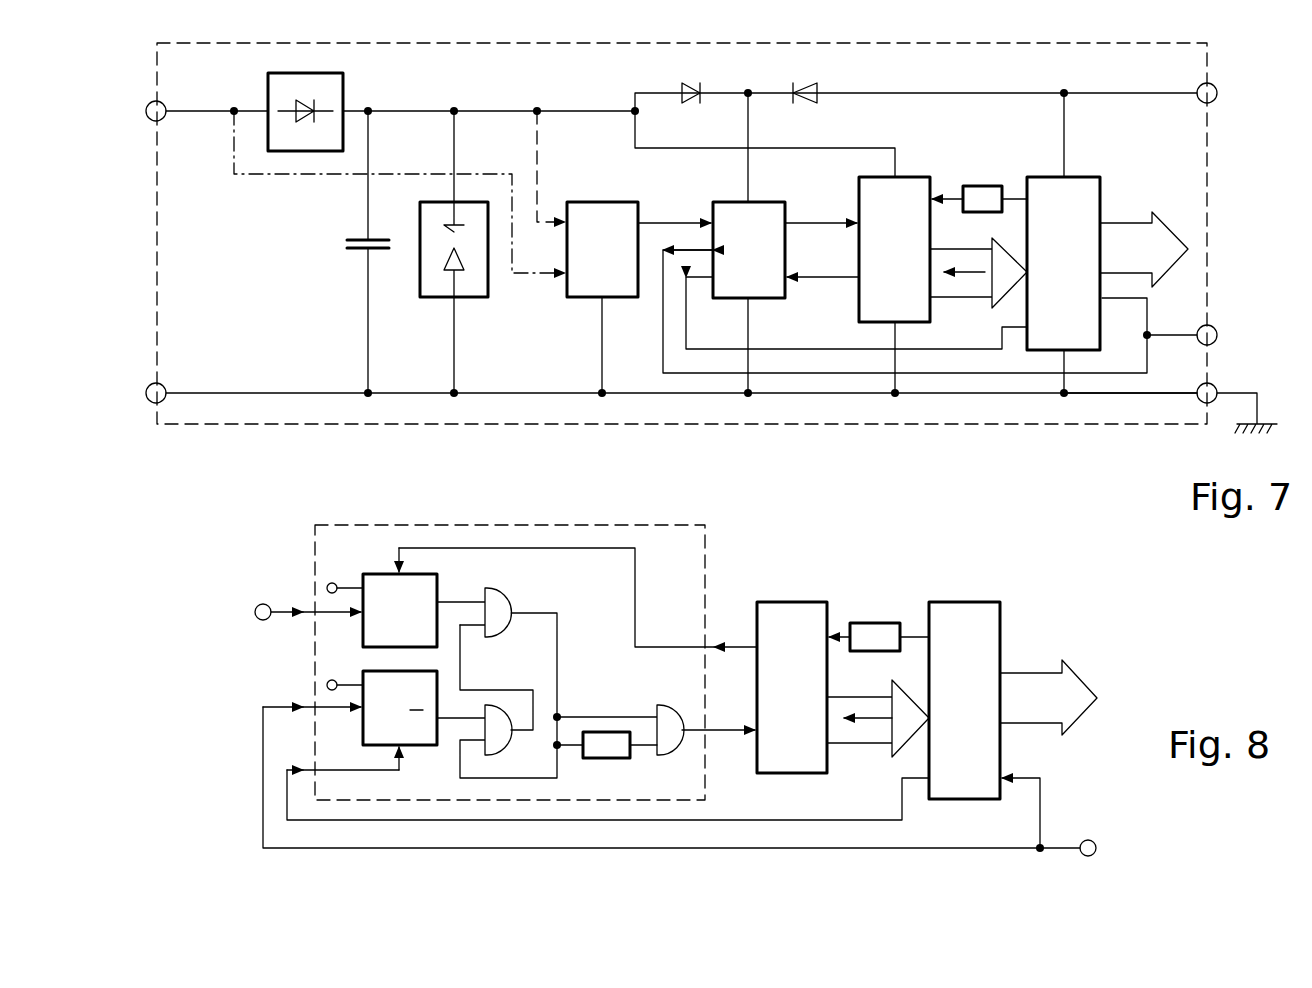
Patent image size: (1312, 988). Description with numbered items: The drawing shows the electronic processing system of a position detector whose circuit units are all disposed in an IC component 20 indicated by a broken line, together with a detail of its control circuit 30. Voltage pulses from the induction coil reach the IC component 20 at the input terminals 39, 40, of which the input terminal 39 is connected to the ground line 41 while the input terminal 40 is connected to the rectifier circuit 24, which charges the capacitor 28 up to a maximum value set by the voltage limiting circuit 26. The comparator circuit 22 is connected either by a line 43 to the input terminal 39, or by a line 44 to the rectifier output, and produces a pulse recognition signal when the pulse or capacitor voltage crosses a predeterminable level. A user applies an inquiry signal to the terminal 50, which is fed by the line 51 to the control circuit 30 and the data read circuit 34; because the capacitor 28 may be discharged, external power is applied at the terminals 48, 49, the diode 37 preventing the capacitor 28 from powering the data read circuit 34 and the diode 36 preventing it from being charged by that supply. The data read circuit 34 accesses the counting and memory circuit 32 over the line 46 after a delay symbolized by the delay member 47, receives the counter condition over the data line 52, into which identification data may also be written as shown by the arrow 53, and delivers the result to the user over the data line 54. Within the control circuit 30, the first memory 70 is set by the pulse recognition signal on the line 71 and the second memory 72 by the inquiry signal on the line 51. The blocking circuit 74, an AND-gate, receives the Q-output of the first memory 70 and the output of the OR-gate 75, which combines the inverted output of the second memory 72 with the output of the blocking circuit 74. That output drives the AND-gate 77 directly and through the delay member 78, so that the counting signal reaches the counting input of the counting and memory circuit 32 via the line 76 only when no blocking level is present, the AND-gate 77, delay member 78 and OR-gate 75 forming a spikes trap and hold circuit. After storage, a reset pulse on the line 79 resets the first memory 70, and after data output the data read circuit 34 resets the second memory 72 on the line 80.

In FIG. 7, the IC component 20 is at (1208, 46).
In FIG. 7, the comparator circuit 22 is at (600, 200).
In FIG. 7, the rectifier circuit 24 is at (345, 80).
In FIG. 7, the voltage limiting circuit 26 is at (432, 298).
In FIG. 7, the capacitor 28 is at (348, 240).
In FIG. 7, the control circuit 30 is at (768, 200).
In FIG. 8, the control circuit 30 is at (662, 525).
In FIG. 7, the non-volatile memory and counting circuit 32 is at (912, 176).
In FIG. 8, the non-volatile memory and counting circuit 32 is at (793, 601).
In FIG. 7, the data read circuit 34 is at (1092, 176).
In FIG. 8, the data read circuit 34 is at (990, 602).
In FIG. 7, the diode 36 is at (684, 84).
In FIG. 7, the diode 37 is at (812, 84).
In FIG. 7, the input terminal 39 is at (148, 104).
In FIG. 7, the input terminal 40 is at (148, 386).
In FIG. 7, the ground line 41 is at (1127, 395).
In FIG. 7, the line 43 is at (272, 177).
In FIG. 7, the line 44 is at (537, 145).
In FIG. 7, the line 46 is at (952, 198).
In FIG. 8, the line 46 is at (912, 636).
In FIG. 7, the delay member 47 is at (984, 185).
In FIG. 8, the delay member 47 is at (866, 622).
In FIG. 7, the terminal 48 is at (1217, 387).
In FIG. 7, the terminal 49 is at (1218, 95).
In FIG. 7, the terminal 50 is at (1217, 328).
In FIG. 8, the terminal 50 is at (1096, 842).
In FIG. 7, the line 51 is at (662, 320).
In FIG. 8, the line 51 is at (262, 780).
In FIG. 7, the data line 52 is at (986, 298).
In FIG. 8, the data line 52 is at (884, 752).
In FIG. 7, the arrow 53 is at (970, 272).
In FIG. 8, the arrow 53 is at (870, 718).
In FIG. 7, the data line 54 is at (1180, 236).
In FIG. 8, the data line 54 is at (1080, 685).
In FIG. 8, the first memory 70 is at (362, 625).
In FIG. 7, the line 71 is at (662, 222).
In FIG. 8, the line 71 is at (285, 605).
In FIG. 8, the second memory 72 is at (362, 720).
In FIG. 8, the blocking circuit 74 is at (508, 597).
In FIG. 8, the OR-gate 75 is at (502, 748).
In FIG. 7, the line 76 is at (816, 222).
In FIG. 8, the line 76 is at (712, 735).
In FIG. 8, the AND-gate 77 is at (675, 705).
In FIG. 8, the delay member 78 is at (620, 758).
In FIG. 7, the line 79 is at (816, 277).
In FIG. 8, the line 79 is at (462, 547).
In FIG. 7, the line 80 is at (808, 348).
In FIG. 8, the line 80 is at (400, 772).